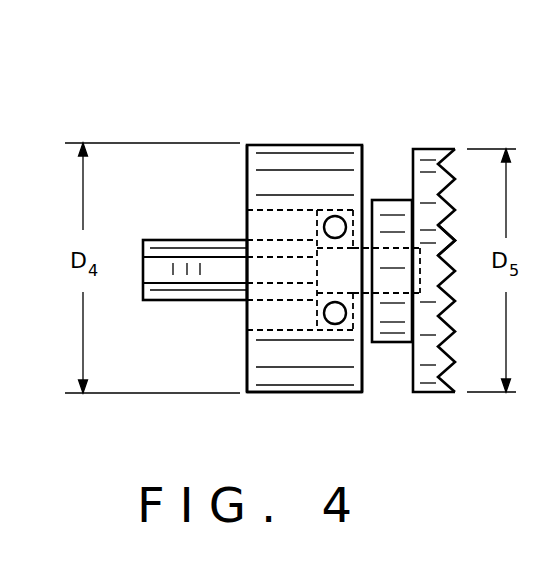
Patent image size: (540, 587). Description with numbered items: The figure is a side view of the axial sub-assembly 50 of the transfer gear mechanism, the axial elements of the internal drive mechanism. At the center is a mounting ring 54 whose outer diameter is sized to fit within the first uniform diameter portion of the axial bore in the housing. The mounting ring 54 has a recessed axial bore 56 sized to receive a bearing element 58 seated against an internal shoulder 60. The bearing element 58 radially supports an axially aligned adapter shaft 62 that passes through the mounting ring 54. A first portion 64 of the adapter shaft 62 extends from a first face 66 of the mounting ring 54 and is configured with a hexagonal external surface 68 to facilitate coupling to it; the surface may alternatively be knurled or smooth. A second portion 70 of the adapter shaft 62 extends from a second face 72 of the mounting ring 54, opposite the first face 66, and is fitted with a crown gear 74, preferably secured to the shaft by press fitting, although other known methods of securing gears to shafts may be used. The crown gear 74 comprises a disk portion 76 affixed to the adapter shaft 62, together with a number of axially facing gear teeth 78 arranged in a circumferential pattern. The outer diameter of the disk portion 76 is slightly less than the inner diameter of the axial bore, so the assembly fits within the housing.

The axial sub-assembly 50 is at (241, 131).
The mounting ring 54 is at (282, 372).
The recessed axial bore 56 is at (250, 315).
The bearing element 58 is at (324, 326).
The internal shoulder 60 is at (353, 317).
The adapter shaft 62 is at (338, 271).
The first portion of the adapter shaft 64 is at (203, 273).
The first face of the mounting ring 66 is at (246, 205).
The hexagonal external surface 68 is at (153, 291).
The second portion of the adapter shaft 70 is at (392, 277).
The second face of the mounting ring 72 is at (367, 148).
The crown gear 74 is at (439, 171).
The disk portion 76 is at (467, 270).
The gear teeth 78 is at (455, 238).